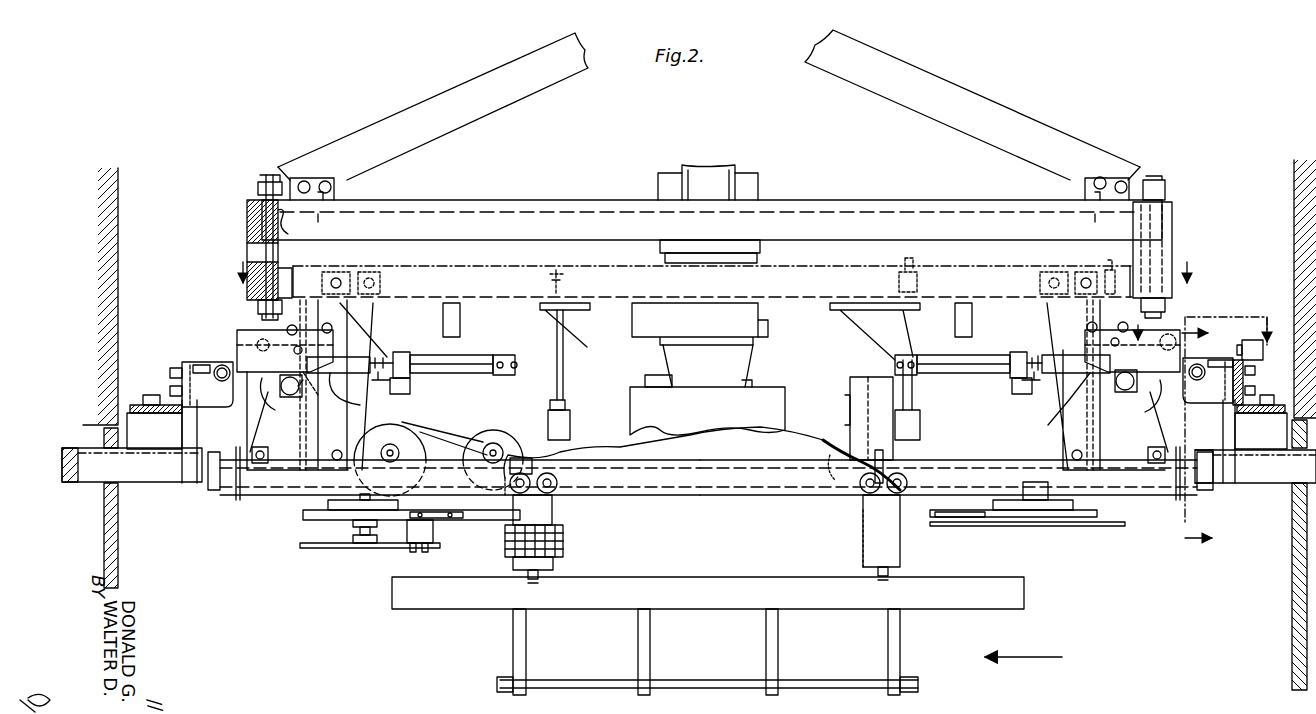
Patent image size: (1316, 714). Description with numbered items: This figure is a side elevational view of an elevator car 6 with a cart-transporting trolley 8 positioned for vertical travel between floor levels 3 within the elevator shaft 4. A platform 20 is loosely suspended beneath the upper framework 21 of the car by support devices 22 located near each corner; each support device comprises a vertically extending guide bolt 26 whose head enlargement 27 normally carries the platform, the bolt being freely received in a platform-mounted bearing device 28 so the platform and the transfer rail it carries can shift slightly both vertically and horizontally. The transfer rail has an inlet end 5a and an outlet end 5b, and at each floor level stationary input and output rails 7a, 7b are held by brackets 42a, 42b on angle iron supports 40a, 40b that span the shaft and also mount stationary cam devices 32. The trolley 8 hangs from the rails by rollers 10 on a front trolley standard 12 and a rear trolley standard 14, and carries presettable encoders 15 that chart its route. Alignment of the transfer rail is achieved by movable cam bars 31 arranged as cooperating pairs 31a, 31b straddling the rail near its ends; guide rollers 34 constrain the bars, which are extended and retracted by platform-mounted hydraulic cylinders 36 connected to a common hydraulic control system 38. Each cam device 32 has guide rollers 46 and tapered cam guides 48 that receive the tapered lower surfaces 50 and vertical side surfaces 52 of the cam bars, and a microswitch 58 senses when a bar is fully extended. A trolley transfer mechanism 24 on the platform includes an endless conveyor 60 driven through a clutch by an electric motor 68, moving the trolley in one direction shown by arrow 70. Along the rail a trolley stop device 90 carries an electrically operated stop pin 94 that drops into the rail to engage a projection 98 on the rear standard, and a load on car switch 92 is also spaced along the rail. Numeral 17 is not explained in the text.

The floor levels 3 is at (711, 274).
The elevator shaft 4 is at (120, 250).
The inlet end of transfer rail 5a is at (1170, 500).
The outlet end of transfer rail 5b is at (268, 500).
The elevator car 6 is at (1068, 130).
The input stationary rail 7a is at (1258, 485).
The output stationary rail 7b is at (82, 452).
The trolley 8 is at (1040, 596).
The rollers 10 is at (557, 480).
The front trolley standard 12 is at (556, 562).
The rear trolley standard 14 is at (900, 553).
The encoders 15 is at (507, 548).
The support post 17 is at (118, 588).
The platform 20 is at (518, 272).
The upper framework 21 is at (524, 202).
The support devices 22 is at (242, 245).
The trolley transfer mechanism 24 is at (356, 555).
The guide bolts 26 is at (282, 255).
The head enlargements 27 is at (262, 316).
The bearing devices 28 is at (300, 280).
The cam bars 31 is at (365, 350).
The pair of cam bars 31a is at (1050, 405).
The pair of cam bars 31b is at (364, 393).
The stationary cam devices 32 is at (183, 332).
The guide rollers 34 is at (262, 326).
The hydraulic cylinders 36 is at (450, 360).
The hydraulic control system 38 is at (788, 385).
The angle iron support 40a is at (1265, 393).
The angle iron support 40b is at (170, 408).
The bracket 42a is at (1235, 430).
The bracket 42b is at (197, 430).
The guide rollers 46 is at (222, 364).
The tapered cam guides 48 is at (200, 364).
The tapered lower surfaces 50 is at (292, 396).
The side surfaces 52 is at (712, 448).
The microswitches 58 is at (1254, 340).
The endless conveyor 60 is at (305, 526).
The electric motor 68 is at (478, 418).
The arrow 70 is at (1018, 662).
The trolley stop device 90 is at (848, 428).
The load on car switch 92 is at (512, 435).
The stop pin 94 is at (840, 458).
The projection 98 is at (905, 470).